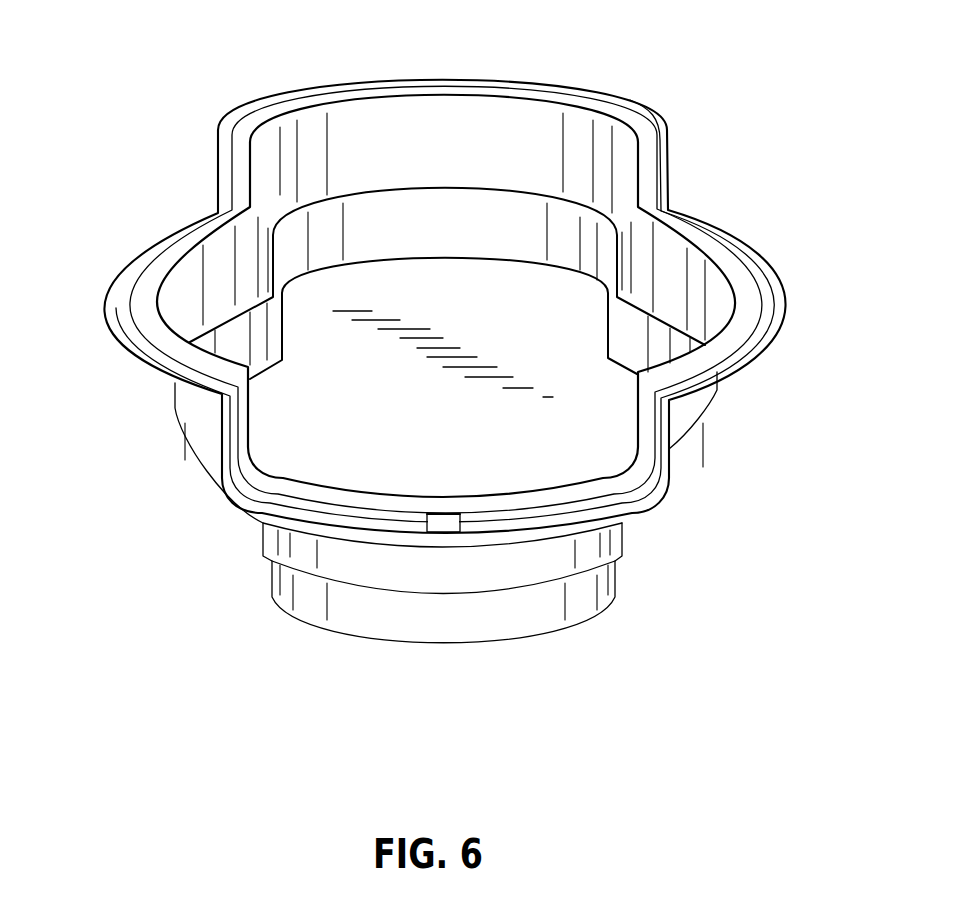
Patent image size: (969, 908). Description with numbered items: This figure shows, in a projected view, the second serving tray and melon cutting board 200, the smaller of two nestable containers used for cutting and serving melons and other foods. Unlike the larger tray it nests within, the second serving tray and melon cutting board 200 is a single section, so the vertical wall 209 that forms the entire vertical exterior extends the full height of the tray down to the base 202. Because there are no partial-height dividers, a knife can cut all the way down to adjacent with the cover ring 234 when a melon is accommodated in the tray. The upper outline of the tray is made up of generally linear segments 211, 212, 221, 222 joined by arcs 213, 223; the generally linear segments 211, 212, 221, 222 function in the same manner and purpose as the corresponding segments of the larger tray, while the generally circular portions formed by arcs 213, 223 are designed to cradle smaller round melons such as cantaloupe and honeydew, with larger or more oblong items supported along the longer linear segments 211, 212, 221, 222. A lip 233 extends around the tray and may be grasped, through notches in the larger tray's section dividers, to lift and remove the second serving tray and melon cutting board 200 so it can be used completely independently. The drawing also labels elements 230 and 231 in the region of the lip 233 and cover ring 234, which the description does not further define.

The second serving tray and melon cutting board 200 is at (439, 397).
The base 202 is at (460, 413).
The vertical wall 209 is at (522, 606).
The generally linear segment 211 is at (652, 170).
The generally linear segment 212 is at (656, 500).
The arc 213 is at (700, 230).
The generally linear segment 221 is at (246, 136).
The generally linear segment 222 is at (241, 424).
The arc 223 is at (146, 278).
The lower body portion 230 is at (728, 378).
The tab 231 is at (438, 528).
The lip 233 is at (780, 326).
The cover ring 234 is at (740, 270).